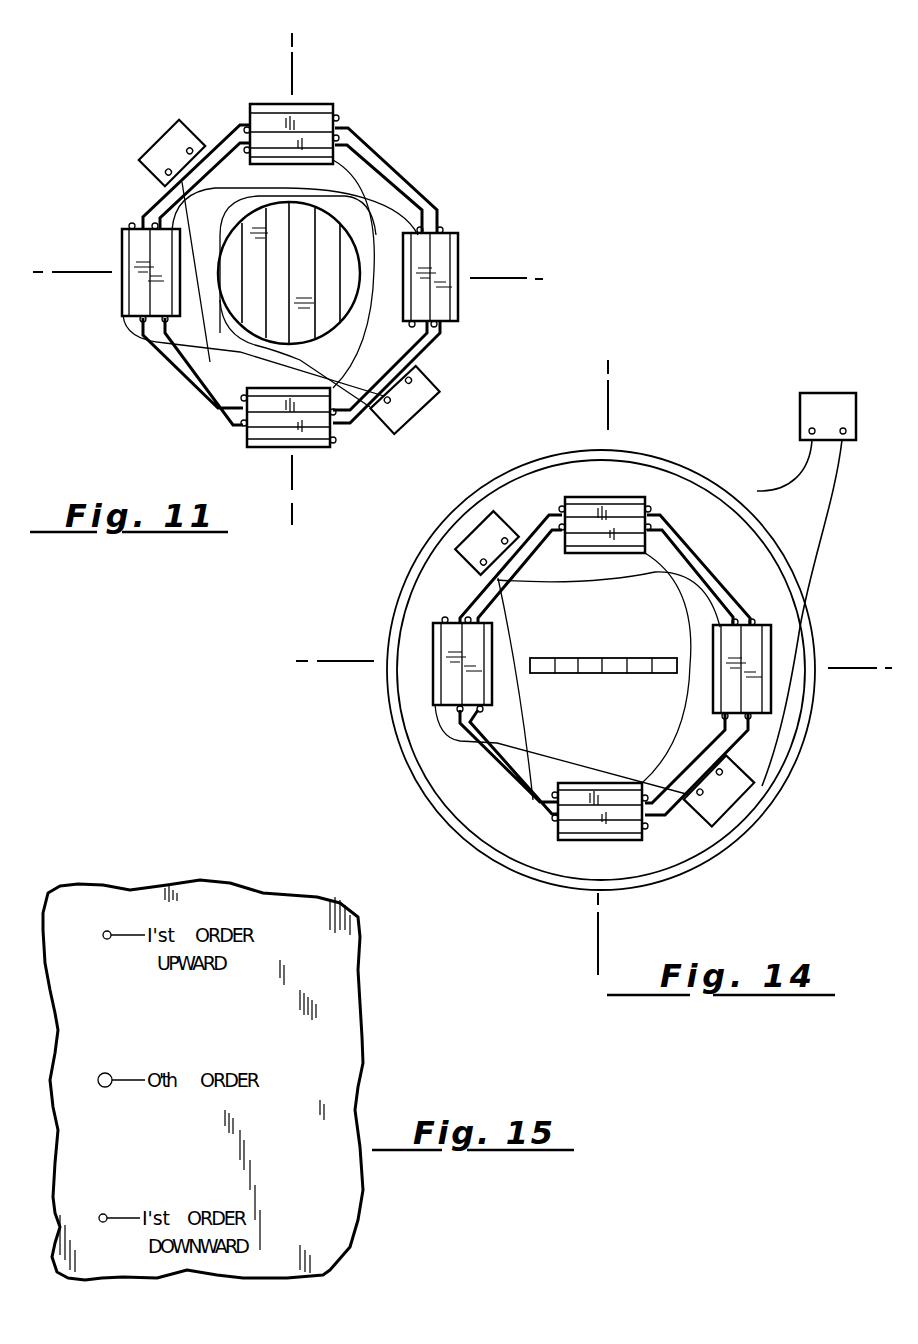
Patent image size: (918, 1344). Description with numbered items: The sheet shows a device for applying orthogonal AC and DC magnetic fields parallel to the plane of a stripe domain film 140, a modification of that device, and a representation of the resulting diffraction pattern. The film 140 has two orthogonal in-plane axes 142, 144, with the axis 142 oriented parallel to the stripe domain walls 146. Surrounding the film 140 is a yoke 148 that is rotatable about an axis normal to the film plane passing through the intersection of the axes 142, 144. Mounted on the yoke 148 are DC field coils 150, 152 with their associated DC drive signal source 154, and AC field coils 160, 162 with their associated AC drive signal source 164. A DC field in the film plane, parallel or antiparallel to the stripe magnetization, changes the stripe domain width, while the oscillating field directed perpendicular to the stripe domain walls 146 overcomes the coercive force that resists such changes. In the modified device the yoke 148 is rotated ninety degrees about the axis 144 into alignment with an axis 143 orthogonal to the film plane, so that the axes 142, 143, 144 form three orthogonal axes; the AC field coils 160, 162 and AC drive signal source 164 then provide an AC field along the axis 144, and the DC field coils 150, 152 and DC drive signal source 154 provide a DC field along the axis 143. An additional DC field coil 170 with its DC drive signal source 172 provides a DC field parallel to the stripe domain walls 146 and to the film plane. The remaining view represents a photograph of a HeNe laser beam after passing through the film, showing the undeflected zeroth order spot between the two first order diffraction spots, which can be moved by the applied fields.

In FIG. 11, the stripe domain film 140 is at (240, 348).
In FIG. 14, the stripe domain film 140 is at (591, 673).
In FIG. 11, the axis 142 is at (293, 60).
In FIG. 14, the axis 143 is at (612, 397).
In FIG. 11, the axis 144 is at (515, 279).
In FIG. 14, the axis 144 is at (847, 672).
In FIG. 11, the stripe domain walls 146 is at (317, 208).
In FIG. 14, the stripe domain walls 146 is at (637, 657).
In FIG. 11, the yoke 148 is at (428, 208).
In FIG. 14, the yoke 148 is at (710, 576).
In FIG. 11, the DC field coil 150 is at (305, 449).
In FIG. 14, the DC field coil 150 is at (618, 842).
In FIG. 11, the DC field coil 152 is at (315, 104).
In FIG. 14, the DC field coil 152 is at (598, 497).
In FIG. 11, the DC drive signal source 154 is at (162, 142).
In FIG. 14, the DC drive signal source 154 is at (470, 535).
In FIG. 11, the AC field coil 160 is at (460, 243).
In FIG. 14, the AC field coil 160 is at (772, 638).
In FIG. 11, the AC field coil 162 is at (122, 300).
In FIG. 14, the AC field coil 162 is at (433, 637).
In FIG. 11, the AC drive signal source 164 is at (430, 407).
In FIG. 14, the AC drive signal source 164 is at (733, 808).
In FIG. 14, the additional DC field coil 170 is at (692, 467).
In FIG. 14, the DC drive signal source 172 is at (822, 393).